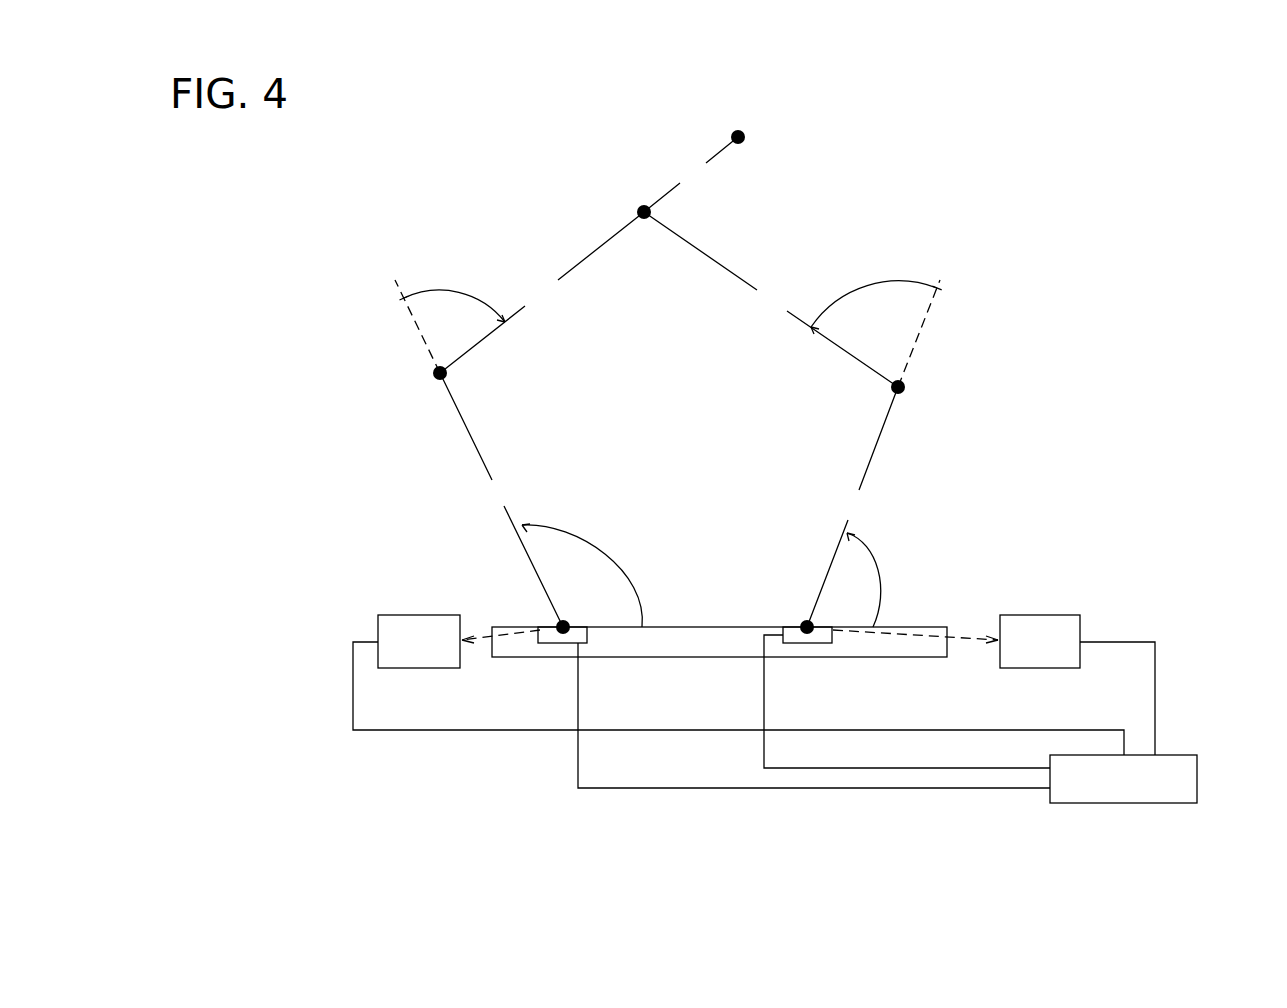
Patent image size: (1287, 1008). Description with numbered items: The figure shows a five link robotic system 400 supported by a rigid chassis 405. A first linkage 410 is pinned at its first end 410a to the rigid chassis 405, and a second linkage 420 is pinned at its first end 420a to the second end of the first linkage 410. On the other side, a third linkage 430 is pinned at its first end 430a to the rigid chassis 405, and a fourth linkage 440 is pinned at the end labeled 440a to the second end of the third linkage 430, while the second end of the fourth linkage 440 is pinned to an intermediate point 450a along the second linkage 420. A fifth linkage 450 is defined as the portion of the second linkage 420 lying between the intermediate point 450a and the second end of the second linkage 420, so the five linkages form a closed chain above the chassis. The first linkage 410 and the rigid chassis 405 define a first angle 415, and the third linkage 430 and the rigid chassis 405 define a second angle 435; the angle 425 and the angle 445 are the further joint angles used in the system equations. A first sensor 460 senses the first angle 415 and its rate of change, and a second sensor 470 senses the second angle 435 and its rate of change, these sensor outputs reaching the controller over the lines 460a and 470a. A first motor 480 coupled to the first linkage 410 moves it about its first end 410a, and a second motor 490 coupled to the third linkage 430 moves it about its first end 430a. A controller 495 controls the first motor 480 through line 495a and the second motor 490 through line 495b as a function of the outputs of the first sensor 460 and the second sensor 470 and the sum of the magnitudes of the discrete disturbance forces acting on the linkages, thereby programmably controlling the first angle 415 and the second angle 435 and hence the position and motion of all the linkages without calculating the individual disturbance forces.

The five link robotic system 400 is at (477, 146).
The rigid chassis 405 is at (887, 658).
The first linkage 410 is at (533, 568).
The first end of the first linkage 410a is at (566, 622).
The first angle 415 is at (640, 593).
The second linkage 420 is at (593, 252).
The first end of the second linkage 420a is at (430, 383).
The angle q2 425 is at (480, 302).
The third linkage 430 is at (873, 457).
The first end of the third linkage 430a is at (803, 621).
The second angle 435 is at (868, 552).
The fourth linkage 440 is at (703, 250).
The fourth joint 440a is at (905, 392).
The angle q4 445 is at (910, 282).
The fifth linkage 450 is at (712, 158).
The intermediate point 450a is at (637, 206).
The first sensor 460 is at (553, 647).
The first slider signal line 460a is at (627, 790).
The second sensor 470 is at (805, 645).
The second slider signal line 470a is at (838, 778).
The first motor 480 is at (403, 668).
The second motor 490 is at (1038, 668).
The controller 495 is at (1122, 805).
The line 495a is at (450, 732).
The line 495b is at (1157, 673).